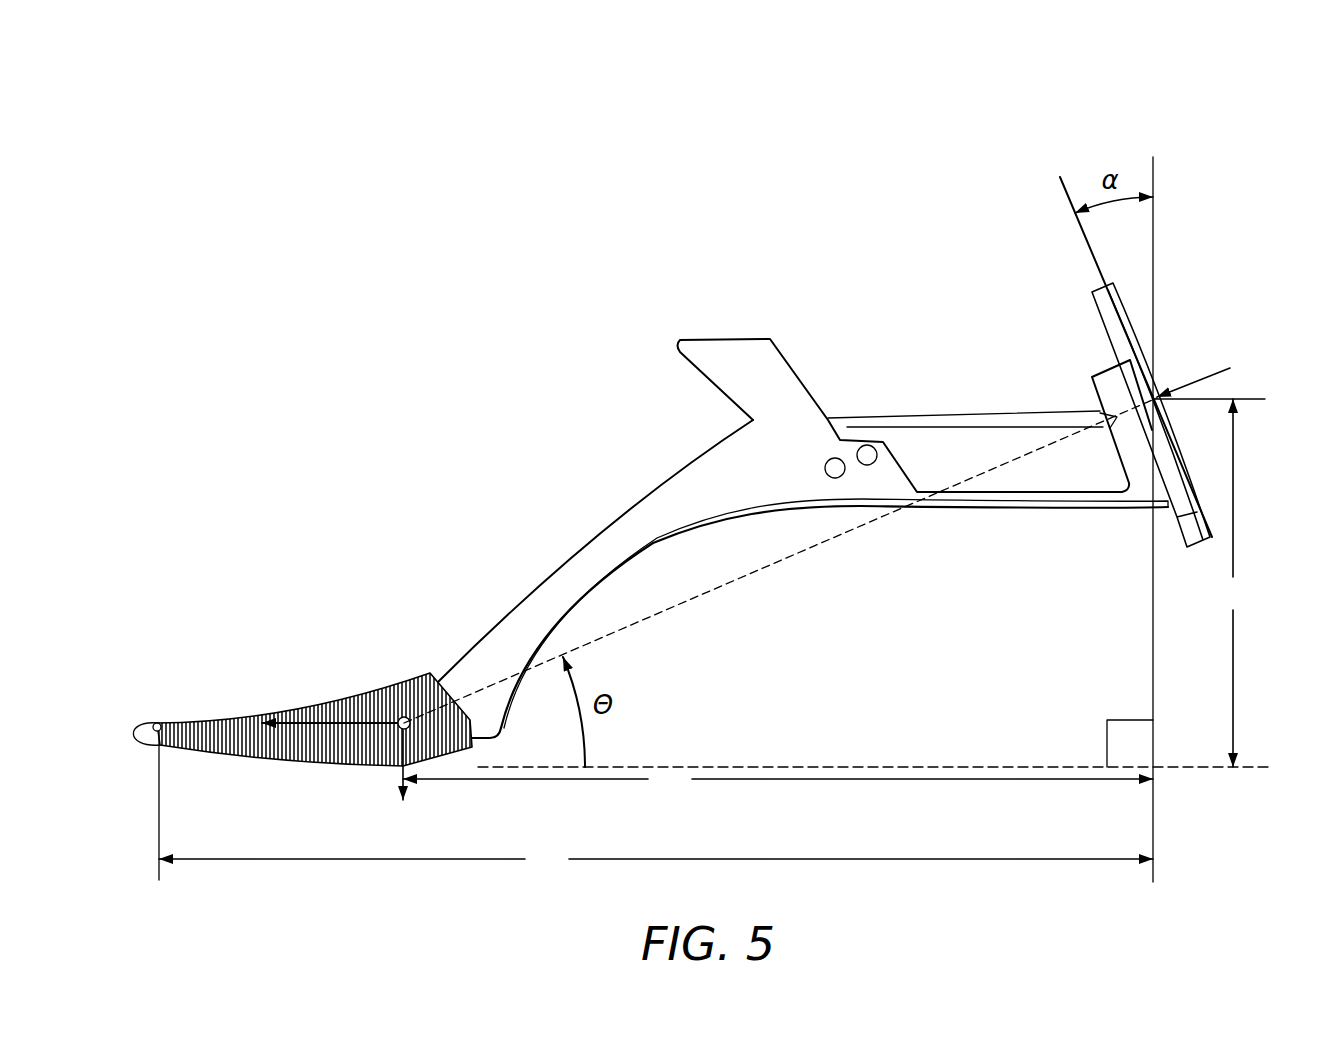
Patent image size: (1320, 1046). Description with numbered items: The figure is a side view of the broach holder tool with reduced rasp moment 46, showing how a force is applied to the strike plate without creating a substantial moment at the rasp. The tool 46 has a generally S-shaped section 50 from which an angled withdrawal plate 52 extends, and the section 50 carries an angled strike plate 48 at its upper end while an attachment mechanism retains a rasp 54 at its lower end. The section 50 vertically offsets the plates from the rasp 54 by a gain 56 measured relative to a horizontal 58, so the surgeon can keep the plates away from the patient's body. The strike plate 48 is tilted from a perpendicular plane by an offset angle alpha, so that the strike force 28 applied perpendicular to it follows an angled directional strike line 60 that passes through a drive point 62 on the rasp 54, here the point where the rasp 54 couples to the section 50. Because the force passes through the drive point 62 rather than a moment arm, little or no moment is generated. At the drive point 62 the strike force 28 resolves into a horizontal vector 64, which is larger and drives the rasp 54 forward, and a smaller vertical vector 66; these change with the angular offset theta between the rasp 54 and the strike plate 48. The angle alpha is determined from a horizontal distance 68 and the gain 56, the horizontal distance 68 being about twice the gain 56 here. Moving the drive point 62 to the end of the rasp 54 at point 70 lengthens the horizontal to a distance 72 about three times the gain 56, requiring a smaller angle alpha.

The broach holder tool with reduced rasp moment 46 is at (478, 148).
The angled withdrawal plate 52 is at (742, 353).
The S-shaped section 50 is at (978, 447).
The angled strike plate 48 is at (1097, 305).
The strike force 28 is at (1202, 378).
The rasp 54 is at (228, 735).
The horizontal vector 64 is at (300, 720).
The drive point 62 is at (402, 716).
The point at the end of the rasp 70 is at (157, 723).
The angled directional strike line 60 is at (700, 593).
The vertical vector 66 is at (403, 779).
The horizontal distance 68 is at (778, 779).
The distance 72 is at (656, 859).
The gain 56 is at (1232, 583).
The horizontal 58 is at (987, 767).